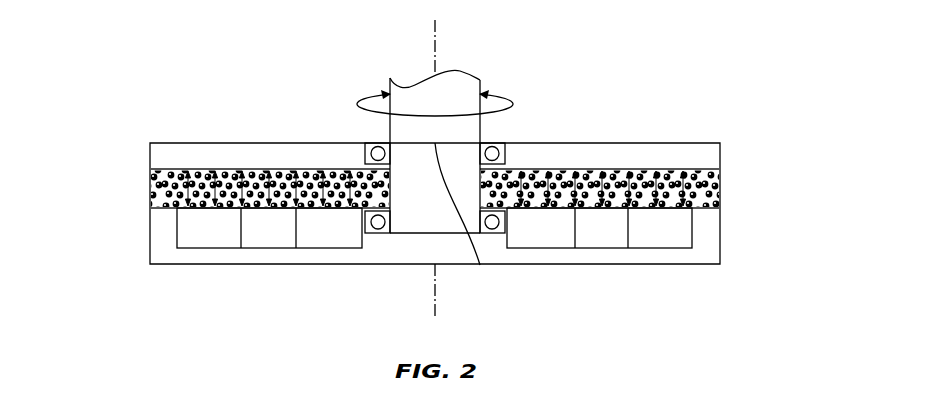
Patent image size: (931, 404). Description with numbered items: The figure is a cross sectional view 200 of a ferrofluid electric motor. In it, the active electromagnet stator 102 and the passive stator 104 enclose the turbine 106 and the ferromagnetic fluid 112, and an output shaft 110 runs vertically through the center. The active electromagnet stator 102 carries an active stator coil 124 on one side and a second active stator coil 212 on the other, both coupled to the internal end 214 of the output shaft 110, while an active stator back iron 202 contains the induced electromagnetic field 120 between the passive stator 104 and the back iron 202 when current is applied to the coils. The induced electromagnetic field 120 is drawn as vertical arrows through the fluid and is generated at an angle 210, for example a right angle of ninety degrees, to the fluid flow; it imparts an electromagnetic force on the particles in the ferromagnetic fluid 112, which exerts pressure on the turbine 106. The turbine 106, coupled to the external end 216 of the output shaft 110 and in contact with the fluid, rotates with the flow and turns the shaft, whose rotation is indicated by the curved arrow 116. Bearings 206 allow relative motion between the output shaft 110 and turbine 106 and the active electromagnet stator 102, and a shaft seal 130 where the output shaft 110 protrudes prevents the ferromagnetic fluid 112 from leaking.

The cross sectional view 200 is at (557, 56).
The active electromagnet stator 102 is at (148, 240).
The passive stator 104 is at (148, 160).
The turbine 106 is at (146, 200).
The output shaft 110 is at (390, 130).
The ferromagnetic fluid 112 is at (153, 187).
The rotation direction 116 is at (508, 103).
The induced electromagnetic field 120 is at (186, 182).
The active stator coil 124 is at (213, 245).
The shaft seal 130 is at (505, 164).
The active stator back iron 202 is at (182, 252).
The bearings 206 is at (370, 141).
The angle 210 is at (672, 180).
The active stator coil 212 is at (660, 238).
The internal end 214 is at (433, 240).
The external end 216 is at (468, 219).